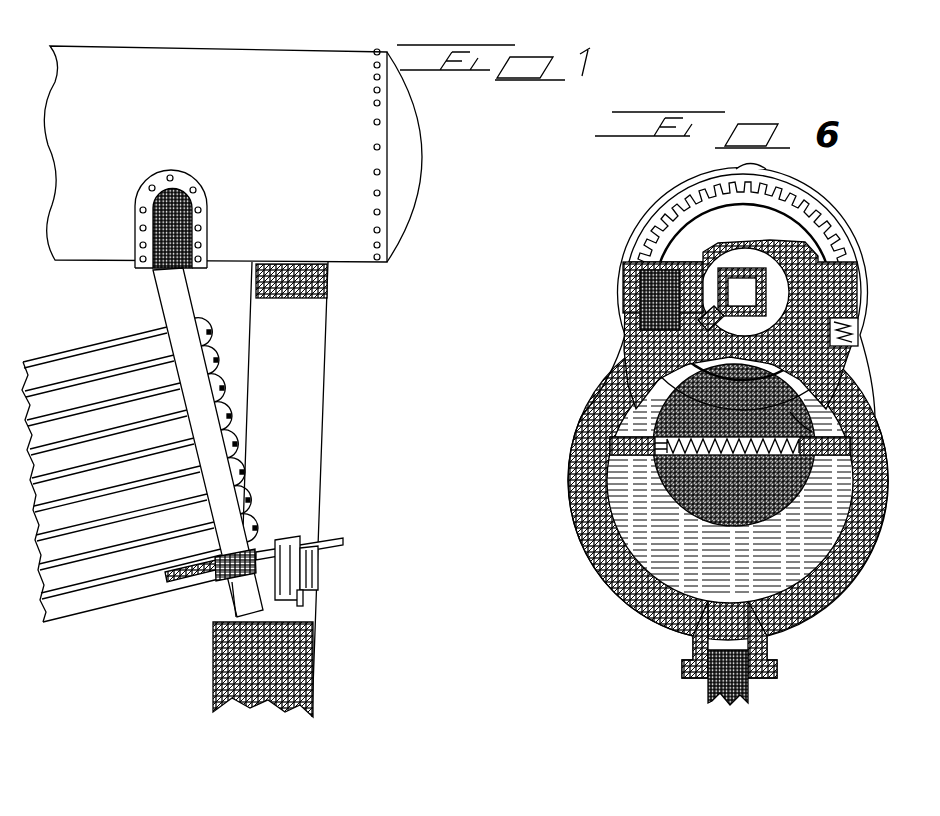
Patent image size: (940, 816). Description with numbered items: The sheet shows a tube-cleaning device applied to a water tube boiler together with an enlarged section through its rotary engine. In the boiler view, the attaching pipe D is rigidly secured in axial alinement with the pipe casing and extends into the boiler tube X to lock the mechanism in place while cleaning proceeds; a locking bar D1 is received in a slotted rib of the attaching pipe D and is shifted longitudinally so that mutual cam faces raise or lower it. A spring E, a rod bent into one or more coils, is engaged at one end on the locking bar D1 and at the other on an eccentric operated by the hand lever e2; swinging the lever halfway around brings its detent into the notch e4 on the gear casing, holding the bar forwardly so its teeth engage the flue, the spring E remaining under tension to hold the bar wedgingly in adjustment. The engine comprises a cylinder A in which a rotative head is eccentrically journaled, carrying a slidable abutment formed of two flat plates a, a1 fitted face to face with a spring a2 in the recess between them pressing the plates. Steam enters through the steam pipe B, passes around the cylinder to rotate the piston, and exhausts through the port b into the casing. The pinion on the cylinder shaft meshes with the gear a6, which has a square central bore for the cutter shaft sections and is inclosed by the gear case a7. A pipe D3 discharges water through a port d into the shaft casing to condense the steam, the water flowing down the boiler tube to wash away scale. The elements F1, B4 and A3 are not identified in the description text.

In FIG. 1, the boiler tube x is at (108, 598).
In FIG. 1, the locking bar D1 is at (267, 547).
In FIG. 1, the spring E is at (232, 590).
In FIG. 1, the attaching pipe D is at (300, 548).
In FIG. 1, the hand lever e2 is at (300, 540).
In FIG. 1, the bracket / hub F1 is at (347, 543).
In FIG. 6, the bracket / hub F1 is at (797, 267).
In FIG. 1, the cylinder A is at (313, 575).
In FIG. 6, the cylinder A is at (833, 513).
In FIG. 1, the steam pipe B is at (302, 598).
In FIG. 6, the steam pipe B is at (748, 697).
In FIG. 6, the notch e4 is at (765, 168).
In FIG. 6, the gear a6 is at (677, 203).
In FIG. 6, the gear case a7 is at (763, 283).
In FIG. 6, the port d is at (643, 270).
In FIG. 6, the pipe D3 is at (660, 312).
In FIG. 6, the strut B4 is at (700, 310).
In FIG. 6, the port b is at (800, 350).
In FIG. 6, the chamber wall A3 is at (790, 420).
In FIG. 6, the flat plate a is at (870, 437).
In FIG. 6, the flat plate a1 is at (850, 457).
In FIG. 6, the spring a2 is at (687, 395).